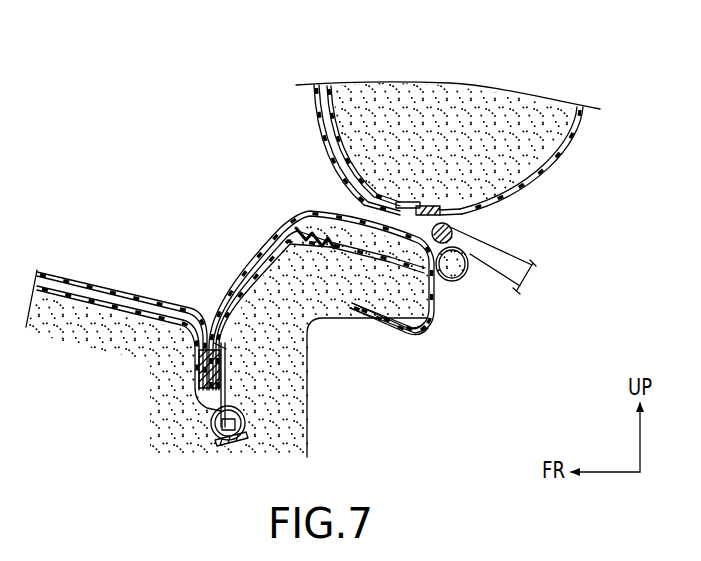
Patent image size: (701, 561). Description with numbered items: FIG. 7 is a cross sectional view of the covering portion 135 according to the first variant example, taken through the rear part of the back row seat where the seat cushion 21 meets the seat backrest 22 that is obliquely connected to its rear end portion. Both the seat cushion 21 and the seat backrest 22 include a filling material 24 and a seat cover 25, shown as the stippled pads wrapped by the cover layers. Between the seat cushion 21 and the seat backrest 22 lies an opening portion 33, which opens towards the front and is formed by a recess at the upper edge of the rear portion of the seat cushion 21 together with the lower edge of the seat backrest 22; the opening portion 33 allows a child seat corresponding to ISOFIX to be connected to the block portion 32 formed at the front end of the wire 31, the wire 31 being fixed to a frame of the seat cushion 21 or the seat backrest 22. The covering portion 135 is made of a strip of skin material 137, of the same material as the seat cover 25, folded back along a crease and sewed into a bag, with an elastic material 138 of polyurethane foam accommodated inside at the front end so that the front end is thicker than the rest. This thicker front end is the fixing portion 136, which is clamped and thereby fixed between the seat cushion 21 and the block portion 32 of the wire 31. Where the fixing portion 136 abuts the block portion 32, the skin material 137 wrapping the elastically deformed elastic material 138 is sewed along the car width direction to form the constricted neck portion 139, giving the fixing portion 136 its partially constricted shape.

The seat cushion 21 is at (115, 276).
The seat backrest 22 is at (580, 136).
The filling material 24 is at (500, 107).
The seat cover 25 is at (312, 106).
The wire 31 is at (512, 253).
The block portion 32 is at (452, 229).
The opening portion 33 is at (328, 231).
The covering portion 135 is at (249, 232).
The fixing portion 136 is at (463, 282).
The skin material 137 is at (246, 252).
The elastic material 138 is at (398, 243).
The constricted neck portion 139 is at (428, 325).